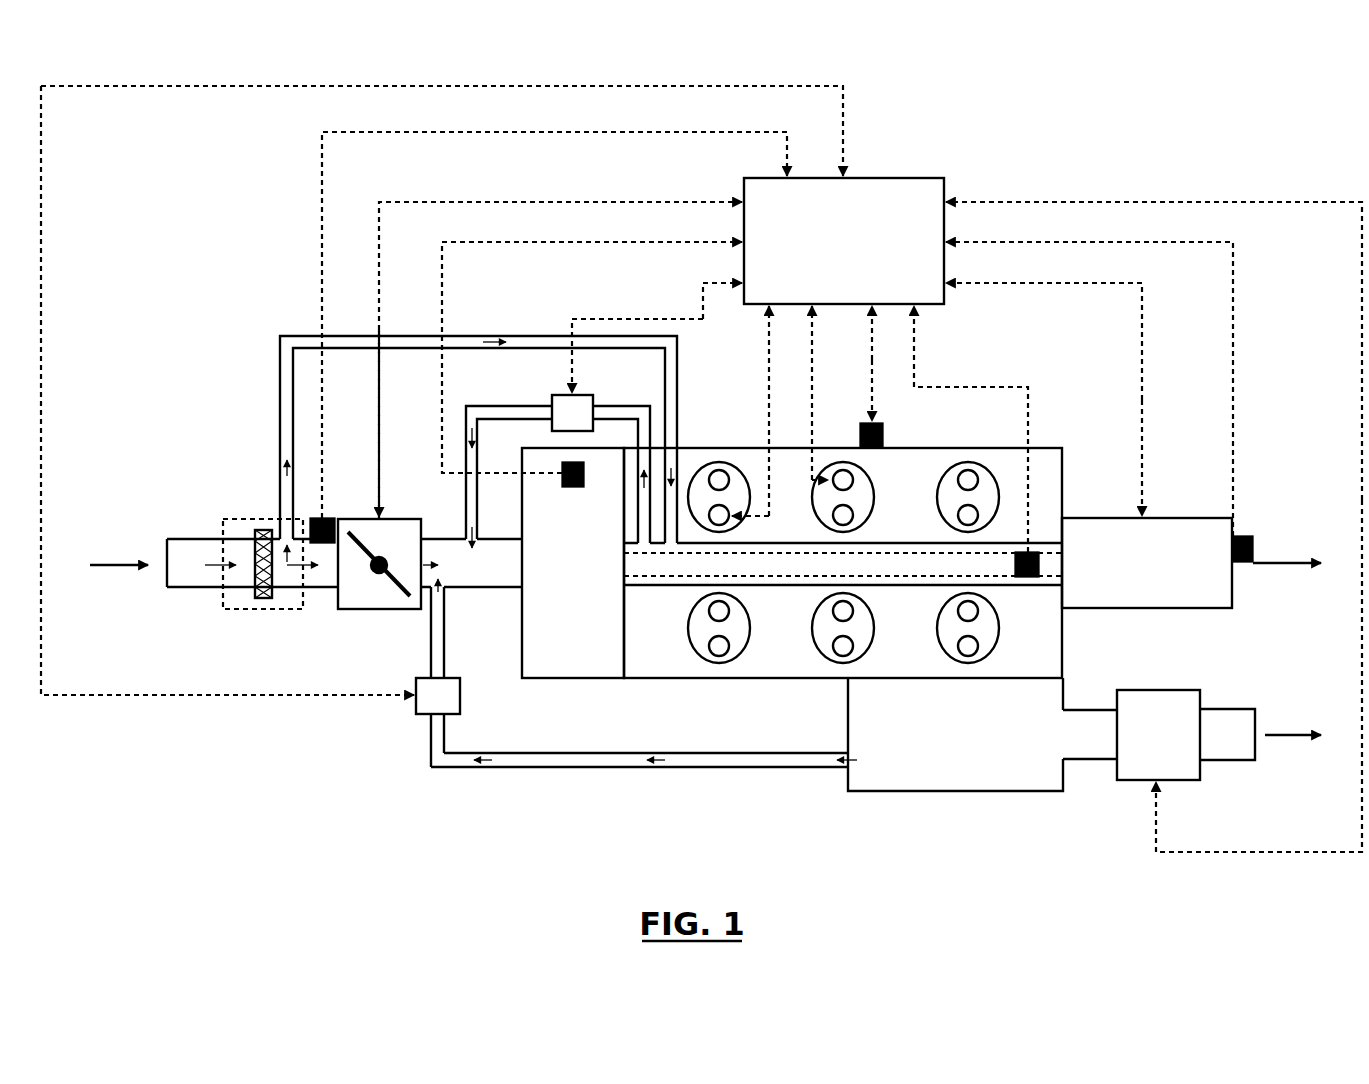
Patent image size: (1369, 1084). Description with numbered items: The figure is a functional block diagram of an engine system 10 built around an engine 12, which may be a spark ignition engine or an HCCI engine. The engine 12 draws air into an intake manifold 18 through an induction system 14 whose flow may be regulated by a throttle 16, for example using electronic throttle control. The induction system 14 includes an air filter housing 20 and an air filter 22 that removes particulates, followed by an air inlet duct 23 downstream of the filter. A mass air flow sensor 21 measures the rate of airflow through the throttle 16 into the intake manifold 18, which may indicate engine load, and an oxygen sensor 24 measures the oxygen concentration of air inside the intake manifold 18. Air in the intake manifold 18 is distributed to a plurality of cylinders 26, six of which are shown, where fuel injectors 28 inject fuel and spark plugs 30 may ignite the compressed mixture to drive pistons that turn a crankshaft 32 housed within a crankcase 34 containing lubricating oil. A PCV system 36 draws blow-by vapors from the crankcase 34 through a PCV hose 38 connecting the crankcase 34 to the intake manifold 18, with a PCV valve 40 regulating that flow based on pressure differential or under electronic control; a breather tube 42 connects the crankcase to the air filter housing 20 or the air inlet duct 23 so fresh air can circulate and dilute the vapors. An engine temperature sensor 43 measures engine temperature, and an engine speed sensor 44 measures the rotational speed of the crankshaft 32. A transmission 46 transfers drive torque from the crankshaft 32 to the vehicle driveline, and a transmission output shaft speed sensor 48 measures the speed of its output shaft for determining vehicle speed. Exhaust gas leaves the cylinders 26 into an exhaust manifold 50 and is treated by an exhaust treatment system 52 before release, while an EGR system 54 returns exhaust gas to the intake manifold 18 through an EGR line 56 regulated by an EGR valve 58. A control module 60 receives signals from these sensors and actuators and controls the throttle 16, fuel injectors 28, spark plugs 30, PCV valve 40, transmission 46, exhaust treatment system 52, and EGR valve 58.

The engine system 10 is at (1183, 83).
The engine 12 is at (672, 680).
The induction system 14 is at (190, 476).
The throttle 16 is at (375, 610).
The intake manifold 18 is at (573, 680).
The air filter housing 20 is at (250, 519).
The mass air flow (MAF) sensor 21 is at (326, 518).
The air filter 22 is at (263, 599).
The air inlet duct 23 is at (320, 588).
The oxygen sensor 24 is at (573, 488).
The cylinders 26 is at (748, 637).
The fuel injectors 28 is at (958, 613).
The spark plugs 30 is at (854, 647).
The crankshaft 32 is at (843, 565).
The crankcase 34 is at (672, 587).
The PCV system 36 is at (598, 292).
The PCV hose 38 is at (497, 406).
The PCV valve 40 is at (572, 413).
The breather tube 42 is at (518, 336).
The engine temperature sensor 43 is at (884, 437).
The engine speed sensor 44 is at (1027, 578).
The transmission 46 is at (1160, 609).
The transmission output shaft speed (TOSS) sensor 48 is at (1243, 563).
The exhaust manifold 50 is at (955, 792).
The exhaust treatment system (ETS) 52 is at (1155, 690).
The EGR system 54 is at (464, 808).
The EGR line 56 is at (652, 768).
The EGR valve 58 is at (438, 696).
The control module 60 is at (903, 178).